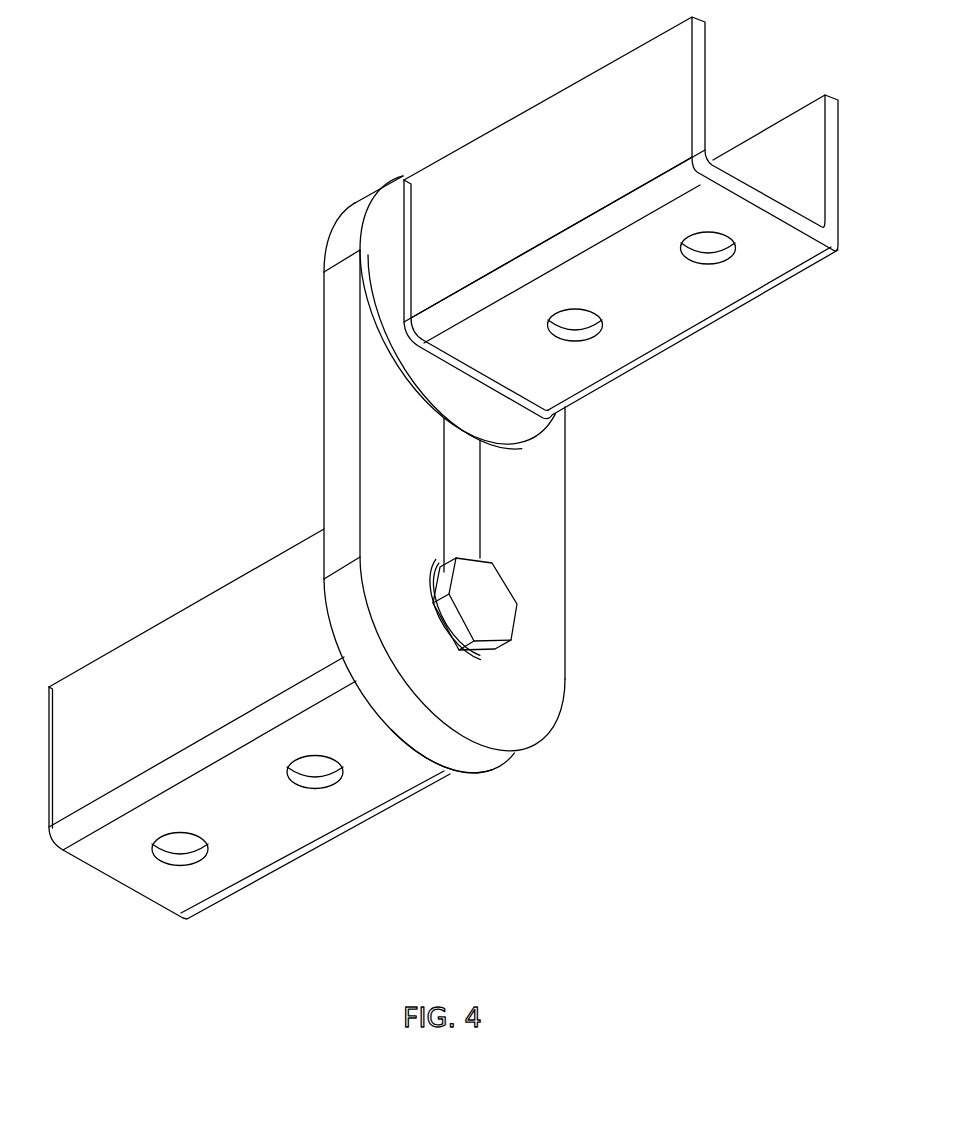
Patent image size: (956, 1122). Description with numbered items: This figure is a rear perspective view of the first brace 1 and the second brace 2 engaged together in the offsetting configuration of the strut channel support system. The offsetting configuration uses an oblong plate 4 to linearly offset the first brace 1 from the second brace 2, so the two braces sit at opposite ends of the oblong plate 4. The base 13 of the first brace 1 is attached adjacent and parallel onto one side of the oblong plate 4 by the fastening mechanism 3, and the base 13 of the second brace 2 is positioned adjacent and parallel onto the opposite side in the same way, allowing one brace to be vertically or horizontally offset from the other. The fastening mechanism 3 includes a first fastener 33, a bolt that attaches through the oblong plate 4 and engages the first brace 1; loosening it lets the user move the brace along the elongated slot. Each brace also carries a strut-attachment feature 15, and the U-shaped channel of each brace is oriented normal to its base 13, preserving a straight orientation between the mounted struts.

The first brace 1 is at (207, 676).
The second brace 2 is at (556, 193).
The fastening mechanism 3 is at (490, 602).
The first fastener 33 is at (506, 600).
The oblong plate 4 is at (410, 471).
The base 13 is at (492, 409).
The strut-attachment feature 15 is at (711, 260).